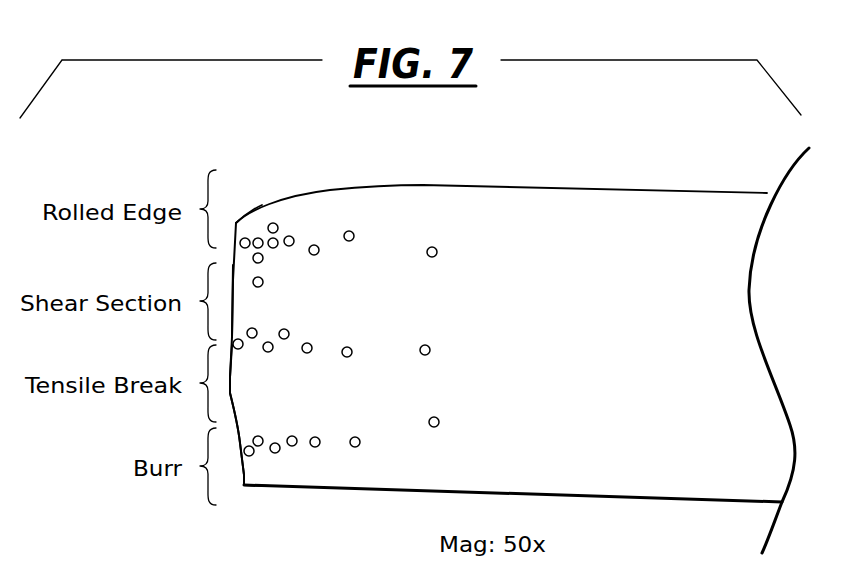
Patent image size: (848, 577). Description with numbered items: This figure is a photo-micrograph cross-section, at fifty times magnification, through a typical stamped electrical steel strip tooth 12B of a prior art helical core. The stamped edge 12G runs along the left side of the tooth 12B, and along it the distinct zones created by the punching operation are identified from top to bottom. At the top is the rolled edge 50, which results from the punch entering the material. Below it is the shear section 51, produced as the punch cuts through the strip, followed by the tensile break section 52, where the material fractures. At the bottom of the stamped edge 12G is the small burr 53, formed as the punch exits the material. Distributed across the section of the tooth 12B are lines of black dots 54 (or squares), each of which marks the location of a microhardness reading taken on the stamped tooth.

The stamped edge 12G is at (236, 237).
The tooth 12B is at (549, 197).
The rolled edge 50 is at (252, 213).
The shear section 51 is at (234, 307).
The tensile break section 52 is at (231, 382).
The burr 53 is at (243, 476).
The black dots 54 is at (307, 348).